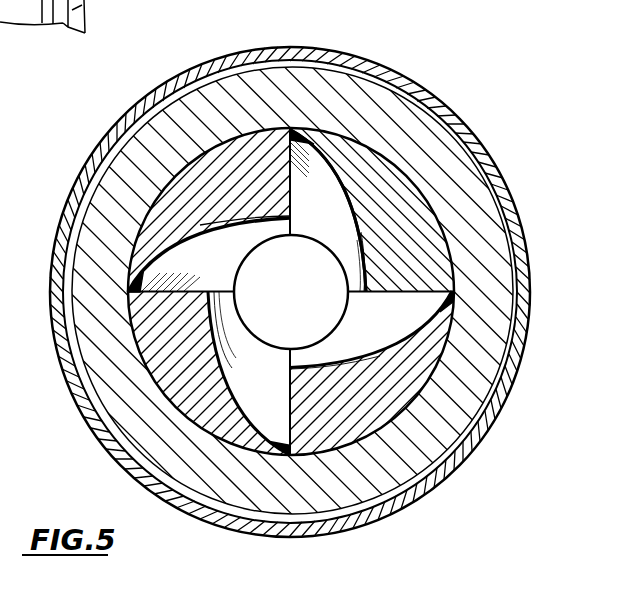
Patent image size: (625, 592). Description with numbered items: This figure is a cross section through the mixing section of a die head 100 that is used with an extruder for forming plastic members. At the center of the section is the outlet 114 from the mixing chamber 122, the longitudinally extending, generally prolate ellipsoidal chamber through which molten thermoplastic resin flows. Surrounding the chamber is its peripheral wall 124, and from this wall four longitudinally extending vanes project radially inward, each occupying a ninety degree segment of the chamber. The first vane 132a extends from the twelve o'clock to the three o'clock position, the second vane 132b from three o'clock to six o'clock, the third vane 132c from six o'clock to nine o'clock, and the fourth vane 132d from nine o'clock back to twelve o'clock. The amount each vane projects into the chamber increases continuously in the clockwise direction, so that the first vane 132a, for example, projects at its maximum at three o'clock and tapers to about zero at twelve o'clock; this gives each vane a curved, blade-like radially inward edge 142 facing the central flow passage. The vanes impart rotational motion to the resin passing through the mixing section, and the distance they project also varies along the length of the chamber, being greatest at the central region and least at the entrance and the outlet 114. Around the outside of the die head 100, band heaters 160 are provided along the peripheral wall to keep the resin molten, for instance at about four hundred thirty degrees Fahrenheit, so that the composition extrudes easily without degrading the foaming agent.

The die head 100 is at (390, 60).
The band heaters 160 is at (93, 153).
The peripheral wall 124 is at (140, 226).
The mixing chamber 122 is at (128, 283).
The radially inward edge 142 is at (353, 217).
The first vane 132a is at (192, 338).
The second vane 132b is at (390, 399).
The third vane 132c is at (418, 240).
The fourth vane 132d is at (236, 203).
The outlet 114 is at (300, 287).